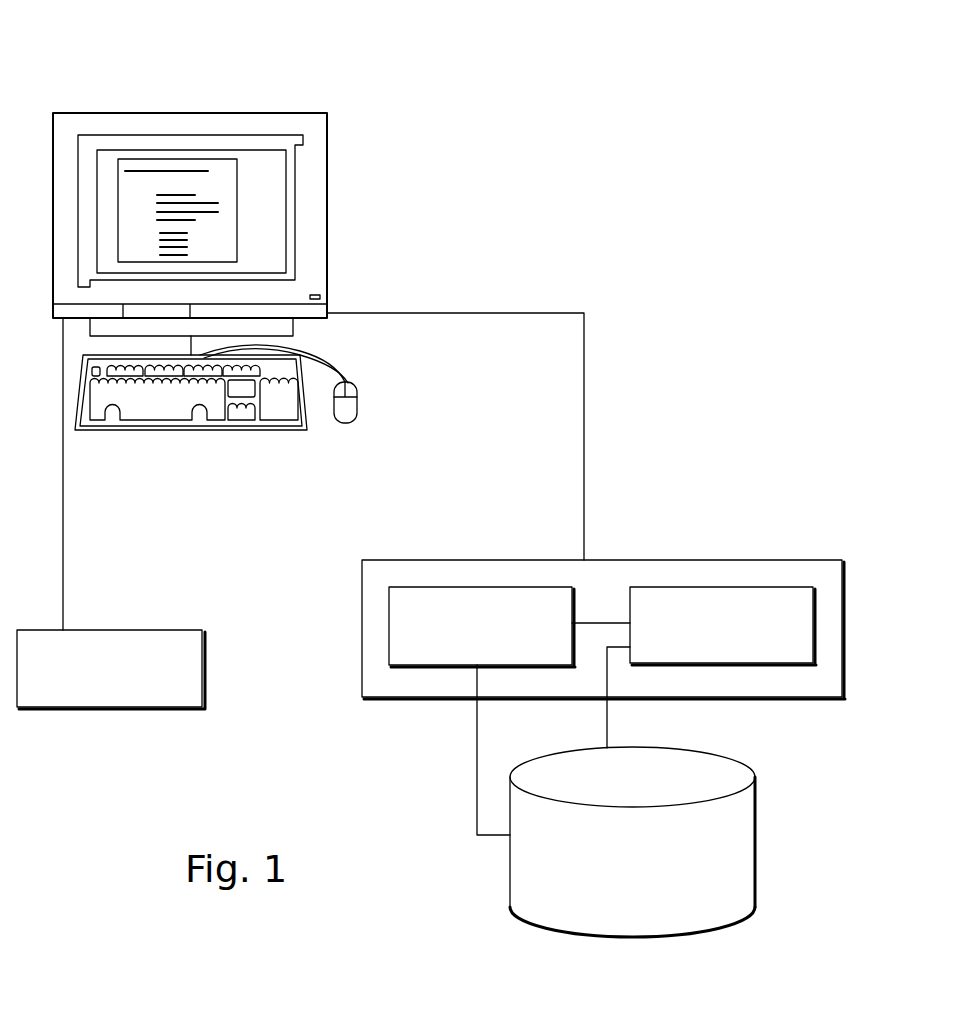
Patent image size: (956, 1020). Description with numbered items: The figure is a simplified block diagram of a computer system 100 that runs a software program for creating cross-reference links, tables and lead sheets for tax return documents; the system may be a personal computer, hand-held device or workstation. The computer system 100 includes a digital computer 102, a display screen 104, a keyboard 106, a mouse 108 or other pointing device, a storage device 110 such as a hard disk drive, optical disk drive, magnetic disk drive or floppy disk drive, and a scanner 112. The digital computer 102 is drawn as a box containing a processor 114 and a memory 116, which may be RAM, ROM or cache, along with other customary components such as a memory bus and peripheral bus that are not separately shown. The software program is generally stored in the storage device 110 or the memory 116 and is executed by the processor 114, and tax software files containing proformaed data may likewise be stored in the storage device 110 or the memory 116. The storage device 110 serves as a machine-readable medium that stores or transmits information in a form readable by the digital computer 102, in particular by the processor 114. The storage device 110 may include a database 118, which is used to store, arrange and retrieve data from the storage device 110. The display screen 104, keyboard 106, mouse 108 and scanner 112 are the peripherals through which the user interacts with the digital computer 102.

The computer system 100 is at (174, 70).
The digital computer 102 is at (612, 560).
The display screen 104 is at (222, 233).
The keyboard 106 is at (155, 428).
The mouse 108 is at (343, 405).
The storage device 110 is at (733, 883).
The scanner 112 is at (135, 642).
The processor 114 is at (793, 598).
The memory 116 is at (430, 603).
The database 118 is at (717, 765).